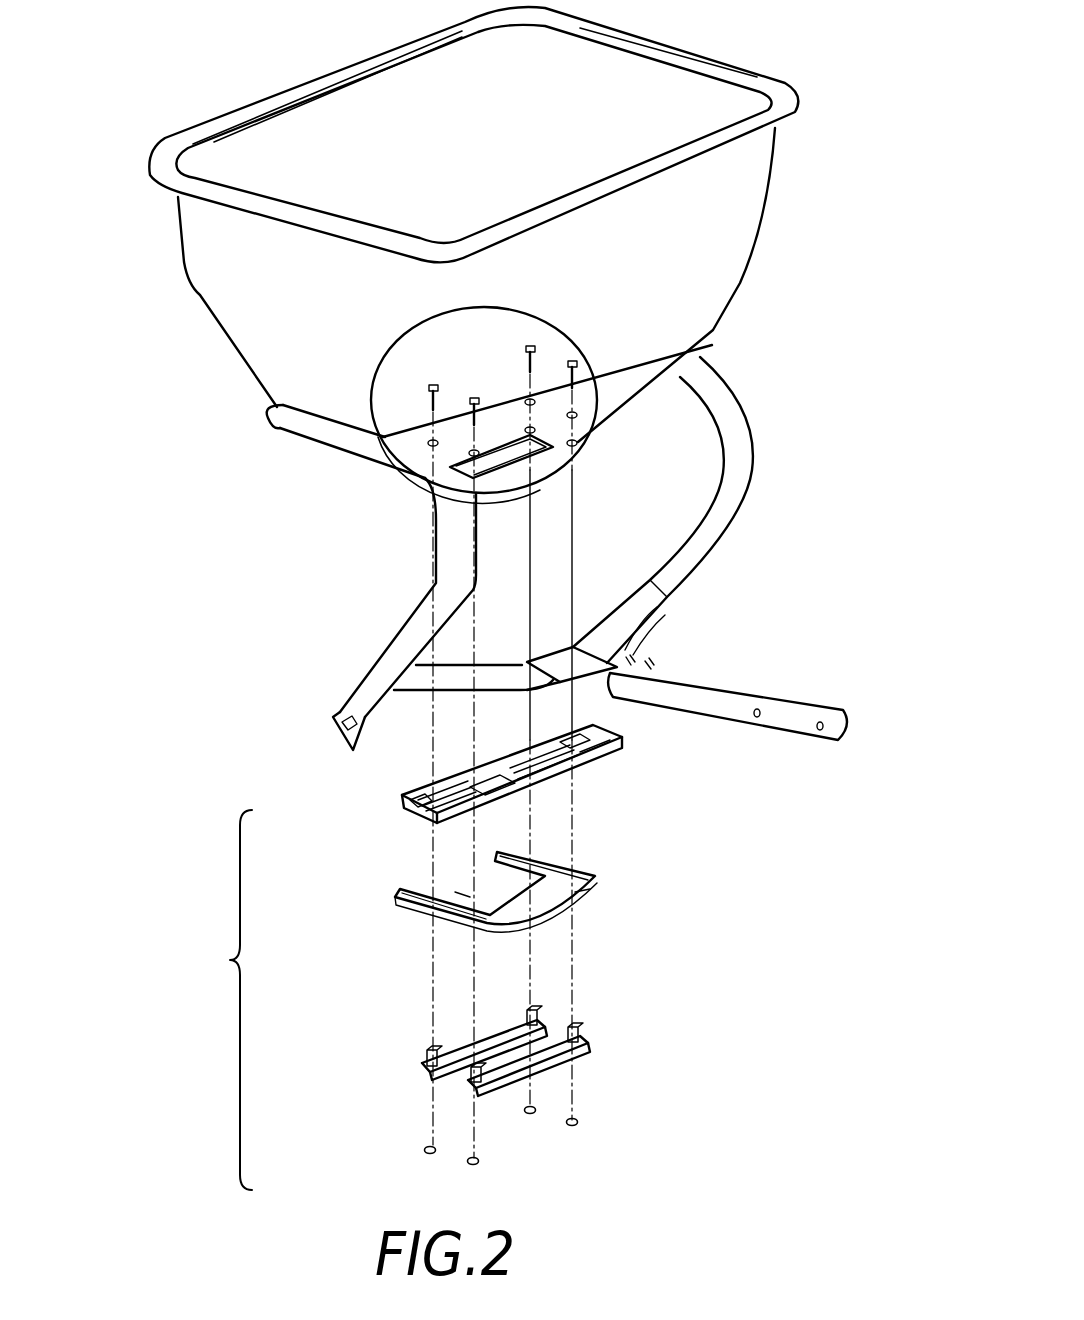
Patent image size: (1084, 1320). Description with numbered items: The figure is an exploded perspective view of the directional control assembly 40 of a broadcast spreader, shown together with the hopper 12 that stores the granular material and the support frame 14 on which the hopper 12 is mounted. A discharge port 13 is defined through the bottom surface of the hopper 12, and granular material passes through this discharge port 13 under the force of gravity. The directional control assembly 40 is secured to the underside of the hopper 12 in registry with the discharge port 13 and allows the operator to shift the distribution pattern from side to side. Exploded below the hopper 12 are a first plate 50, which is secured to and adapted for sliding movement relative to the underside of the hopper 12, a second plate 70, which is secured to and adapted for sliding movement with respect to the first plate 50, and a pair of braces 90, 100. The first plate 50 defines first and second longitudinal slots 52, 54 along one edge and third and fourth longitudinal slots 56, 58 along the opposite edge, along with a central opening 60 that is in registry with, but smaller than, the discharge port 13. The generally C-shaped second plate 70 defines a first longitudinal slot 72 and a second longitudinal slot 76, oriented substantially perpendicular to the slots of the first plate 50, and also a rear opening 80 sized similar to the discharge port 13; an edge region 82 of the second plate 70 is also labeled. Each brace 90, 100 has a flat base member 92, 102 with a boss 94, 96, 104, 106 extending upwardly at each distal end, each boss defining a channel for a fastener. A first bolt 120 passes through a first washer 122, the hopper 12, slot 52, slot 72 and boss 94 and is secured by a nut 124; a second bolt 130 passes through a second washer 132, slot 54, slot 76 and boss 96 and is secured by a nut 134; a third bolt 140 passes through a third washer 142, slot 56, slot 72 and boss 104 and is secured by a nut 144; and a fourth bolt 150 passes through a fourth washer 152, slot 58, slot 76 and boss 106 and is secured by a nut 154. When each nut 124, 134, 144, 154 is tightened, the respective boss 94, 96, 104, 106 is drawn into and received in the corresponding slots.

The hopper 12 is at (748, 188).
The discharge port 13 is at (508, 478).
The support frame 14 is at (293, 427).
The directional control assembly 40 is at (219, 1000).
The first plate 50 is at (527, 766).
The first longitudinal slot 52 is at (430, 782).
The second longitudinal slot 54 is at (575, 742).
The third longitudinal slot 56 is at (497, 783).
The fourth longitudinal slot 58 is at (600, 750).
The central opening 60 is at (505, 770).
The second plate 70 is at (511, 905).
The first longitudinal slot 72 is at (420, 897).
The second longitudinal slot 76 is at (570, 872).
The rear opening 80 is at (463, 892).
The gate plate edge 82 is at (585, 893).
The brace 90 is at (422, 1080).
The base member 92 is at (491, 1052).
The boss 94 is at (432, 1055).
The boss 96 is at (540, 1022).
The brace 100 is at (588, 1040).
The base member 102 is at (546, 1118).
The boss 104 is at (465, 1082).
The boss 106 is at (560, 1050).
The first bolt 120 is at (433, 410).
The first washer 122 is at (425, 440).
The nut 124 is at (428, 1152).
The second bolt 130 is at (535, 348).
The second washer 132 is at (540, 433).
The nut 134 is at (537, 1112).
The third bolt 140 is at (476, 400).
The third washer 142 is at (478, 487).
The nut 144 is at (478, 1165).
The fourth bolt 150 is at (576, 362).
The fourth washer 152 is at (585, 408).
The nut 154 is at (578, 1123).